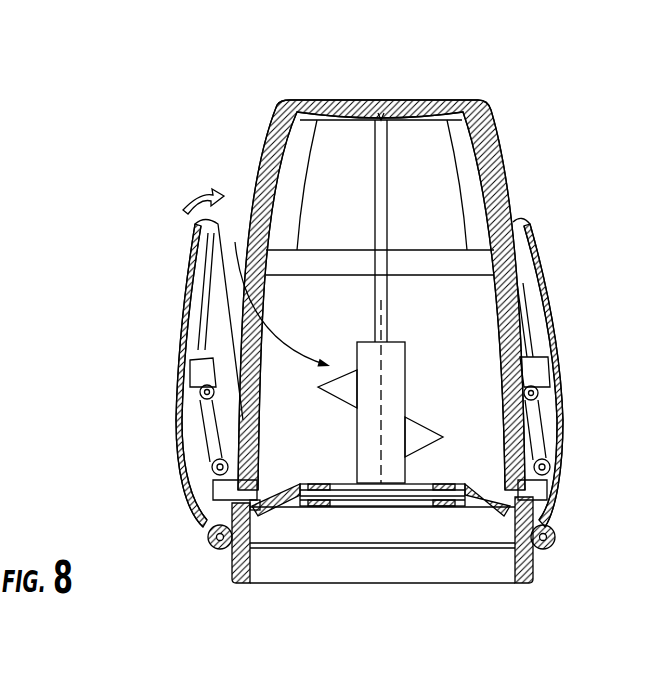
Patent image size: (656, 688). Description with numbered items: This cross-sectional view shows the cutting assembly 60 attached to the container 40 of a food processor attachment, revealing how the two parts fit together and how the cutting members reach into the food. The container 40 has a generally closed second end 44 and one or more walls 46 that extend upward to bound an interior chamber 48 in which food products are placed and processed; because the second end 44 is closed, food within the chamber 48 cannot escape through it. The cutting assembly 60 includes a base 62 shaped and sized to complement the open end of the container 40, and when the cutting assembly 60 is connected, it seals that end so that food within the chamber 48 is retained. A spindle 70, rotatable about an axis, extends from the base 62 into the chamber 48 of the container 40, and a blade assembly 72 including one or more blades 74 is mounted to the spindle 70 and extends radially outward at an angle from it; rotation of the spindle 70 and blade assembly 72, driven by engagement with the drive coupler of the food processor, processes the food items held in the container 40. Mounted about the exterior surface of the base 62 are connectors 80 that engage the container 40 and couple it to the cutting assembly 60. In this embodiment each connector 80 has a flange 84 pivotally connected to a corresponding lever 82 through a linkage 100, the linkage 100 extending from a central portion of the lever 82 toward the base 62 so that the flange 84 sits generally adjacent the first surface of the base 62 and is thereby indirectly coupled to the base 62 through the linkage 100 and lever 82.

The container 40 is at (306, 49).
The second end 44 is at (423, 100).
The walls 46 is at (272, 172).
The interior chamber 48 is at (443, 213).
The spindle 70 is at (394, 364).
The blade assembly 72 is at (256, 277).
The blades 74 is at (342, 390).
The cutting assembly 60 is at (202, 578).
The base 62 is at (468, 563).
The connectors 80 is at (162, 455).
The lever 82 is at (182, 318).
The flange 84 is at (217, 477).
The linkage 100 is at (205, 412).